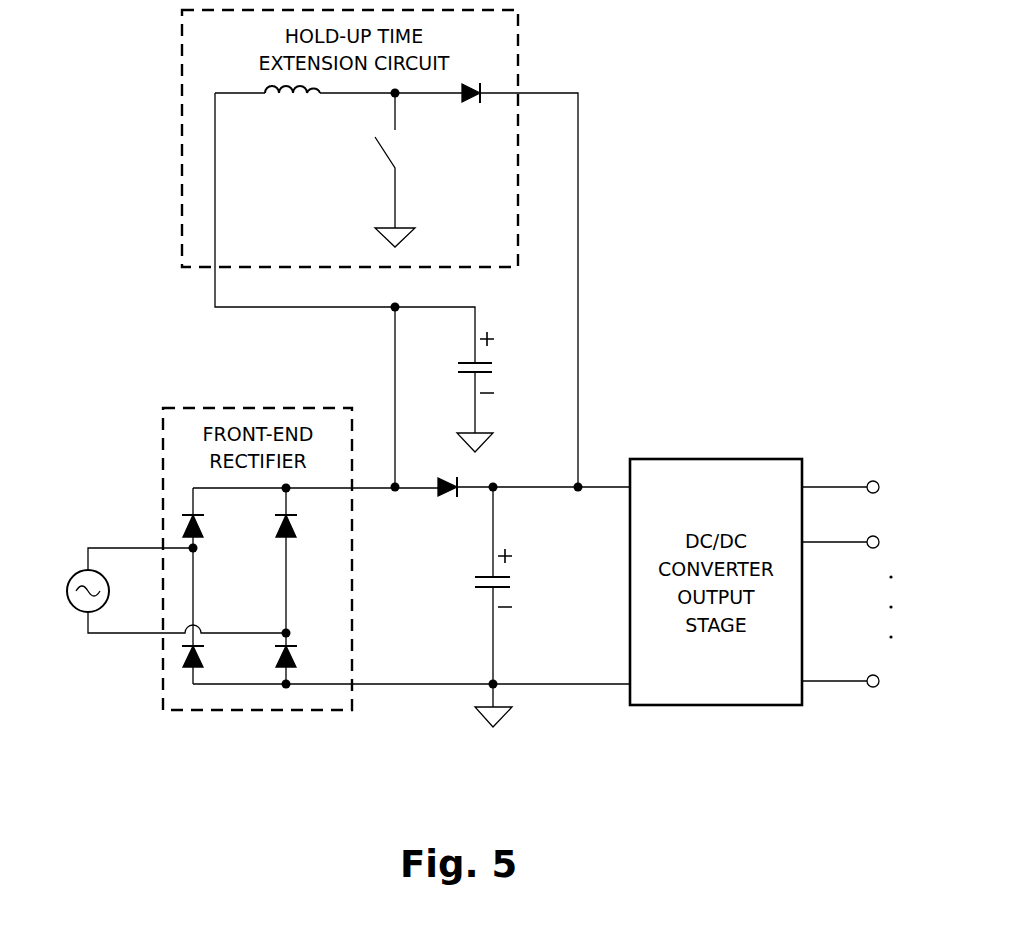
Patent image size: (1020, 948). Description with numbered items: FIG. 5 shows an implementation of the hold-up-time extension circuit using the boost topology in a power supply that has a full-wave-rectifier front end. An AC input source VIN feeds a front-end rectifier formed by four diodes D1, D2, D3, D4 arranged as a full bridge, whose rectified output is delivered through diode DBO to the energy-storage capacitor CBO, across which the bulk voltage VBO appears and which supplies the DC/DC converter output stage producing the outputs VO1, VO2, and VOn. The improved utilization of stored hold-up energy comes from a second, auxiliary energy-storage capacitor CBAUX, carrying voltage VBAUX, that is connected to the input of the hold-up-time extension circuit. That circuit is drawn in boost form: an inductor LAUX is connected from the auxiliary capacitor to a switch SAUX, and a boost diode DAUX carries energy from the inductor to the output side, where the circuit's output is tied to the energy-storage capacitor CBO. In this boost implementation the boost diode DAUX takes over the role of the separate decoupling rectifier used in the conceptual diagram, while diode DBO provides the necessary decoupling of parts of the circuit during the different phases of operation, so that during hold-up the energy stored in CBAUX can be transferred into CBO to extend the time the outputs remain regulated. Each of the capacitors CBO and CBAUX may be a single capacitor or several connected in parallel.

The auxiliary inductor LAUX is at (292, 110).
The auxiliary switch SAUX is at (361, 160).
The auxiliary diode DAUX is at (473, 113).
The auxiliary energy-storage capacitor CBAUX is at (448, 349).
The auxiliary bulk capacitor voltage VBAUX is at (517, 362).
The rectifier diode D1 is at (211, 531).
The rectifier diode D2 is at (211, 662).
The rectifier diode D3 is at (304, 531).
The rectifier diode D4 is at (304, 662).
The AC input voltage source VIN is at (158, 590).
The diode DBO is at (449, 504).
The energy-storage capacitor CBO is at (469, 583).
The bulk output capacitor voltage VBO is at (528, 578).
The output voltage 1 VO1 is at (863, 490).
The output voltage 2 VO2 is at (863, 545).
The output voltage n VOn is at (863, 684).